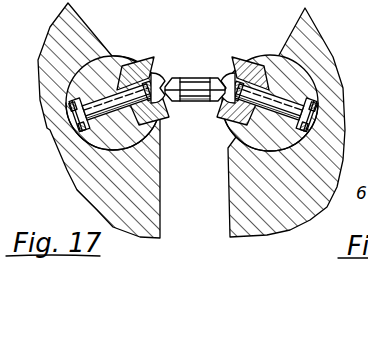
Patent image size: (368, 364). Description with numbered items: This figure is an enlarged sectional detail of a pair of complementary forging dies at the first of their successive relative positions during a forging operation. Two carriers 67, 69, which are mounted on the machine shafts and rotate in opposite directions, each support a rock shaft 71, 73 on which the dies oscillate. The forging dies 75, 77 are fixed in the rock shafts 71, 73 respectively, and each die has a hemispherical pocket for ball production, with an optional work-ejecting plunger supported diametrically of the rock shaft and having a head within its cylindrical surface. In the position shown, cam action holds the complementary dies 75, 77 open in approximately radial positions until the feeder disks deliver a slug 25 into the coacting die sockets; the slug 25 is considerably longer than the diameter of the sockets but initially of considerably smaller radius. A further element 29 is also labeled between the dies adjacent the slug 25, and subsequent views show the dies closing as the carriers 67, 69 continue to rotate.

The slug 25 is at (199, 96).
The coupling member 29 is at (178, 78).
The carrier 67 is at (86, 35).
The carrier 69 is at (297, 38).
The rock shaft 71 is at (124, 62).
The rock shaft 73 is at (270, 62).
The forging die 75 is at (155, 56).
The forging die 77 is at (238, 66).